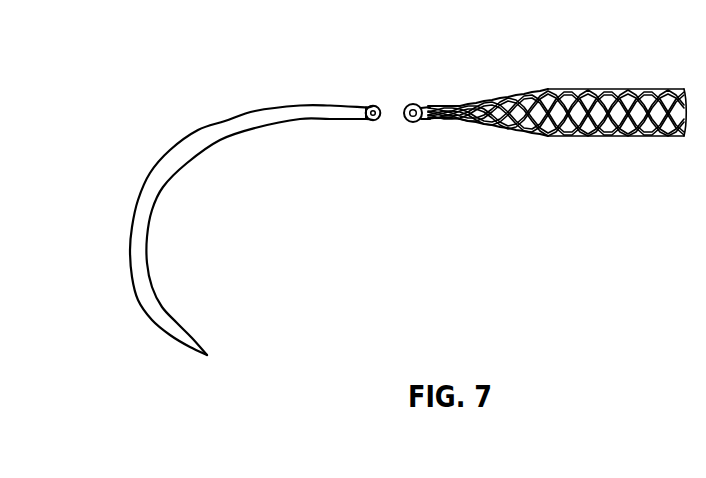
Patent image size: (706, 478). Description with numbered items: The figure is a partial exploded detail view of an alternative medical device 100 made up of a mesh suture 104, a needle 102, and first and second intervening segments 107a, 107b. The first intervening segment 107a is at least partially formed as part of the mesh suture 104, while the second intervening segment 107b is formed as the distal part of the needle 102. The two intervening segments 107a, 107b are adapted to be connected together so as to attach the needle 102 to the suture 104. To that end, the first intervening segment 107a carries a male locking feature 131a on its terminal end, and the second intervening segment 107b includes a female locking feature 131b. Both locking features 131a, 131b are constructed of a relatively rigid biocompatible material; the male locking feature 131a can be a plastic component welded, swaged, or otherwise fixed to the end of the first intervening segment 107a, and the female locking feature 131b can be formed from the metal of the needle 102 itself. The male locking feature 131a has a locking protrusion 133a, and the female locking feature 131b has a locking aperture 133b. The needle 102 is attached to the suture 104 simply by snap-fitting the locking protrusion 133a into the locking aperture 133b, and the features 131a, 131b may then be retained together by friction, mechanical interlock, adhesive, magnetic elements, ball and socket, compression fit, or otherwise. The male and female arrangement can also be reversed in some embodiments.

The medical device 100 is at (579, 49).
The needle 102 is at (144, 205).
The mesh suture 104 is at (611, 131).
The first intervening segment 107a is at (470, 123).
The second intervening segment 107b is at (363, 121).
The male locking feature 131a is at (416, 103).
The female locking feature 131b is at (369, 104).
The locking protrusion 133a is at (413, 122).
The locking aperture 133b is at (375, 121).